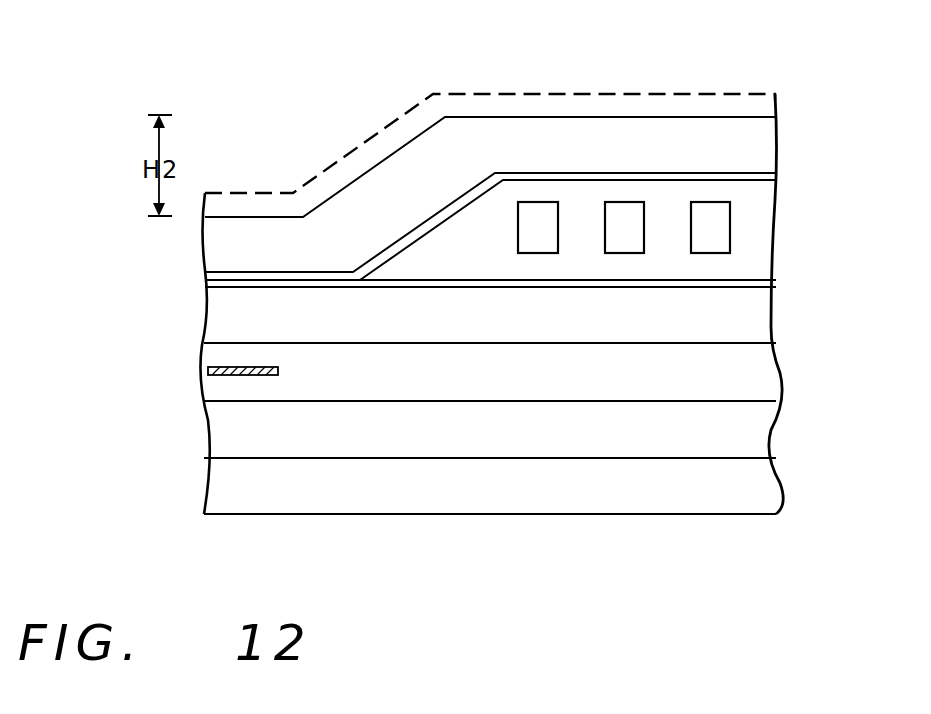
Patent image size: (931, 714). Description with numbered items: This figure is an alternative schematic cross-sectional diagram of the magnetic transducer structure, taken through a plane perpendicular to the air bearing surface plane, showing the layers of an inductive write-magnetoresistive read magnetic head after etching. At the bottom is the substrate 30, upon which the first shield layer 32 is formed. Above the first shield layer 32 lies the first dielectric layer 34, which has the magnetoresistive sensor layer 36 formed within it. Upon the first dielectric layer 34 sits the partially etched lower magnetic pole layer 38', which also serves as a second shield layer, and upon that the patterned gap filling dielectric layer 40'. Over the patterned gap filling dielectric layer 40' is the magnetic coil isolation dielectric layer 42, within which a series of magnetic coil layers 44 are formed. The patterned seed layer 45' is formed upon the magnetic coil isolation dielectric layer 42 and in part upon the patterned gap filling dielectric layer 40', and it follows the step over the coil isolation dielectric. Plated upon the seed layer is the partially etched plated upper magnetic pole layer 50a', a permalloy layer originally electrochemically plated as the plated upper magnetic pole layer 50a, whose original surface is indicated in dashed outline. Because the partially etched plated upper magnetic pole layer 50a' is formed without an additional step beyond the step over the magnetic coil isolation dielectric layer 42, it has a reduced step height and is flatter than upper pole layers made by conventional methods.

The substrate 30 is at (226, 485).
The first shield layer 32 is at (225, 428).
The first dielectric layer 34 is at (222, 390).
The magnetoresistive (MR) sensor layer 36 is at (208, 372).
The partially etched lower magnetic pole layer 38' is at (444, 321).
The patterned gap filling dielectric layer 40' is at (444, 241).
The patterned seed layer 45' is at (444, 223).
The partially etched plated upper magnetic pole layer 50a' is at (441, 182).
The plated upper magnetic pole layer 50a is at (490, 101).
The magnetic coil isolation dielectric layer 42 is at (762, 247).
The magnetic coil layers 44 is at (535, 213).